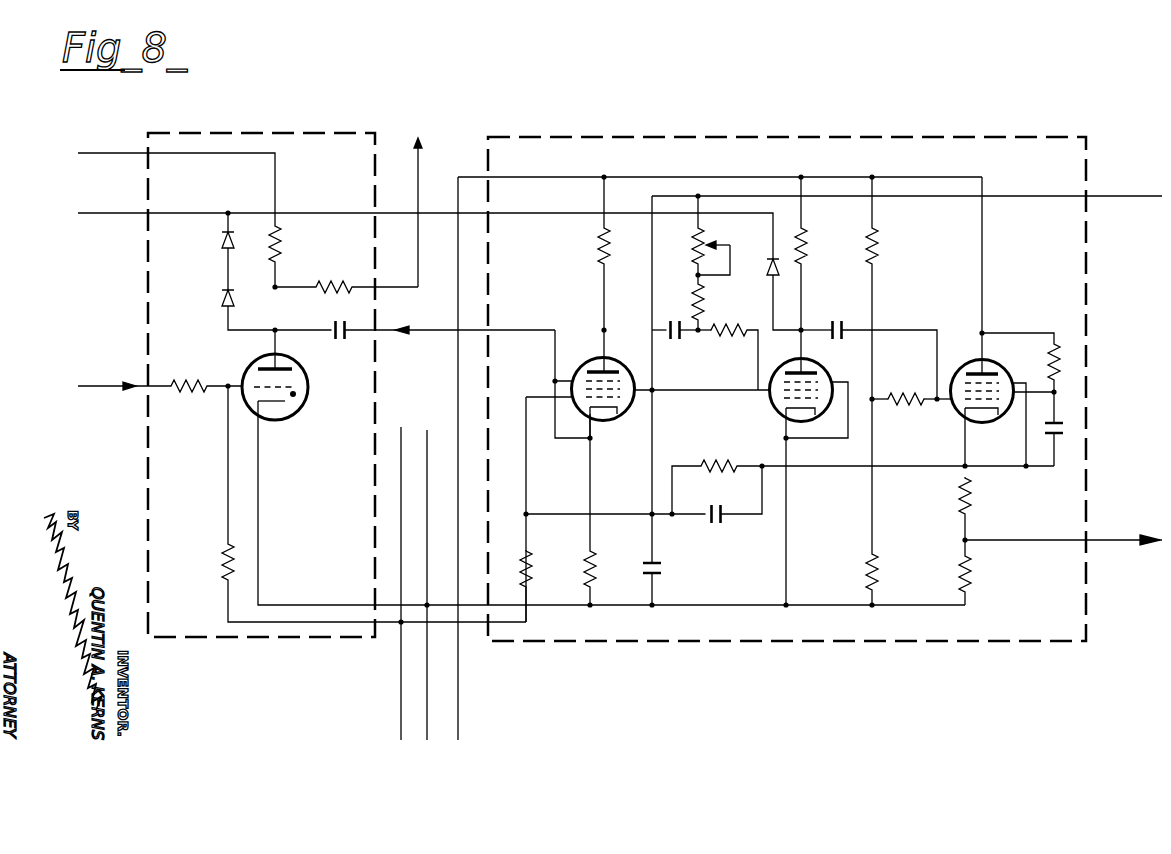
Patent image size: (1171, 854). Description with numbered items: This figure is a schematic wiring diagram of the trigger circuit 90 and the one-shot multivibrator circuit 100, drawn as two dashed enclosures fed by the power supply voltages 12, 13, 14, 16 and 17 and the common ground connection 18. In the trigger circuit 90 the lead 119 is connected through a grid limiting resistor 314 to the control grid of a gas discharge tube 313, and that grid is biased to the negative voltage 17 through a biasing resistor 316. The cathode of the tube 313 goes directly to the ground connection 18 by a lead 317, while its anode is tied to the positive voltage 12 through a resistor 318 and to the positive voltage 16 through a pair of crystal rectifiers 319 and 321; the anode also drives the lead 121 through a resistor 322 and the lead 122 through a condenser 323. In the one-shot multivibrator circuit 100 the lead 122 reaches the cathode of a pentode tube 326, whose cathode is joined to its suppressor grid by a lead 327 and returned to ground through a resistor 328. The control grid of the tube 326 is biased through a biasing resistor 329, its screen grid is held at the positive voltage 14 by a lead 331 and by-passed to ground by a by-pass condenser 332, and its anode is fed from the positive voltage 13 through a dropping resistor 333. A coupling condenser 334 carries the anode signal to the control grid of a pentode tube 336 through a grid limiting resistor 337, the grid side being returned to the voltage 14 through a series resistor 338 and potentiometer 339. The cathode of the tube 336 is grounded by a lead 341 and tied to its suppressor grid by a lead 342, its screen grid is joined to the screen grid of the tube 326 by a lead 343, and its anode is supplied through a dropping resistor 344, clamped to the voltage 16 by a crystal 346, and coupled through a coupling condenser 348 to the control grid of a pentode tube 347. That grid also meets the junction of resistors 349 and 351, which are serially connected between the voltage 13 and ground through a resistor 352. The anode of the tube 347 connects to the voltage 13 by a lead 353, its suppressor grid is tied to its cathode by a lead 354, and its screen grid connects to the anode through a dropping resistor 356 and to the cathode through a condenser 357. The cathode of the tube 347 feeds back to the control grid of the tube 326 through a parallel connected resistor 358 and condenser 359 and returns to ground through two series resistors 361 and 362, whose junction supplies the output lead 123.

The positive voltage 12 is at (113, 154).
The positive voltage 13 is at (699, 174).
The positive voltage 14 is at (1155, 197).
The positive voltage 16 is at (113, 214).
The negative voltage 17 is at (401, 692).
The ground connection 18 is at (427, 679).
The trigger circuit 90 is at (297, 135).
The one-shot multivibrator circuit 100 is at (1015, 137).
The lead 119 is at (121, 388).
The lead 121 is at (418, 155).
The lead 122 is at (434, 331).
The lead 123 is at (1096, 544).
The gas discharge tube 313 is at (294, 374).
The grid limiting resistor 314 is at (180, 378).
The biasing resistor 316 is at (222, 558).
The lead 317 is at (258, 556).
The resistor 318 is at (286, 243).
The crystal rectifier 319 is at (221, 298).
The crystal rectifier 321 is at (221, 241).
The resistor 322 is at (337, 280).
The condenser 323 is at (340, 315).
The pentode tube 326 is at (636, 362).
The lead 327 is at (590, 360).
The resistor 328 is at (594, 561).
The biasing resistor 329 is at (531, 561).
The lead 331 is at (651, 287).
The by-pass condenser 332 is at (662, 568).
The dropping resistor 333 is at (598, 245).
The coupling condenser 334 is at (674, 344).
The pentode tube 336 is at (821, 366).
The grid limiting resistor 337 is at (712, 336).
The resistor 338 is at (705, 307).
The potentiometer 339 is at (708, 244).
The lead 341 is at (786, 516).
The lead 342 is at (844, 436).
The lead 343 is at (724, 396).
The dropping resistor 344 is at (808, 246).
The crystal 346 is at (768, 282).
The pentode tube 347 is at (1025, 360).
The coupling condenser 348 is at (850, 300).
The resistor 349 is at (880, 245).
The resistor 351 is at (866, 571).
The resistor 352 is at (896, 412).
The lead 353 is at (983, 286).
The lead 354 is at (1026, 448).
The dropping resistor 356 is at (1058, 348).
The condenser 357 is at (1062, 440).
The resistor 358 is at (714, 463).
The condenser 359 is at (722, 524).
The resistor 361 is at (959, 506).
The resistor 362 is at (957, 581).